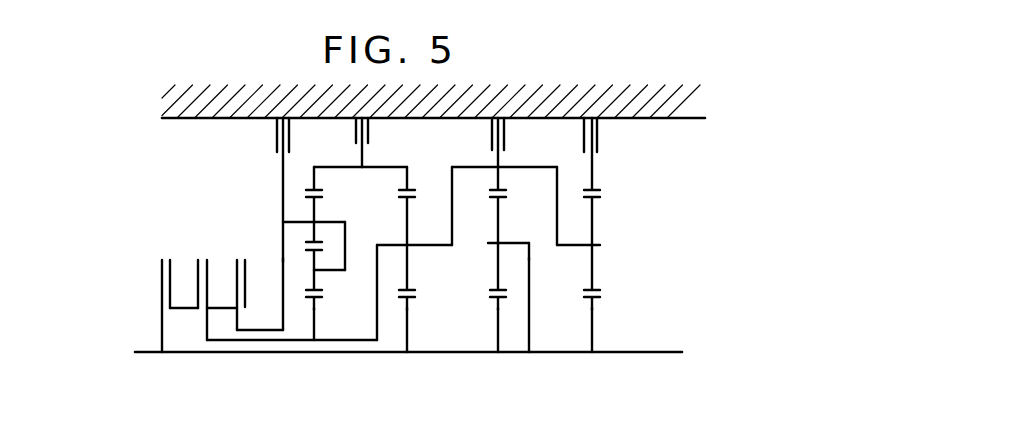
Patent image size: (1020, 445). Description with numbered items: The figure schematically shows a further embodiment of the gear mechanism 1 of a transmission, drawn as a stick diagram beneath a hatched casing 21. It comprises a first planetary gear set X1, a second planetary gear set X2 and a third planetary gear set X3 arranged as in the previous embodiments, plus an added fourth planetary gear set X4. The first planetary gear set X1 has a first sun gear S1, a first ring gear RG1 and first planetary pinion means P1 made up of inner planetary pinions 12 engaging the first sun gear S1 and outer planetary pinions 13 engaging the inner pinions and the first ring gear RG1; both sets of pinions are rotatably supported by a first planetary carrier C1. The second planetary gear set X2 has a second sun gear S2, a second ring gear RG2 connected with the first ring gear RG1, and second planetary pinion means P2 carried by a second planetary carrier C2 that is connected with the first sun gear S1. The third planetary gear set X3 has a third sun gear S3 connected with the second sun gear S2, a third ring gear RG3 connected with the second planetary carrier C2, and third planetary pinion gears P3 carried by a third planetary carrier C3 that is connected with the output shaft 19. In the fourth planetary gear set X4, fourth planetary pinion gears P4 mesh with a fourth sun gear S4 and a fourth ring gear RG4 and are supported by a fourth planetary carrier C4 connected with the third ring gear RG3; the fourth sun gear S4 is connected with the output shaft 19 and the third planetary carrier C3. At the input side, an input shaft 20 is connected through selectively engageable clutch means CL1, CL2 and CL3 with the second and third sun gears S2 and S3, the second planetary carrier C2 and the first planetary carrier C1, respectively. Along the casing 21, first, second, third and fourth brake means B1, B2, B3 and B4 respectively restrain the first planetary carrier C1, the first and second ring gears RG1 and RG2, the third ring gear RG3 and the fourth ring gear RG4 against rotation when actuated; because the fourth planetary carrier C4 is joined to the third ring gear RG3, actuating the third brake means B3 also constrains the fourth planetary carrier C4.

The casing 21 is at (178, 110).
The first brake means B1 is at (277, 135).
The second brake means B2 is at (356, 141).
The third brake means B3 is at (492, 141).
The fourth brake means B4 is at (597, 140).
The first ring gear RG1 is at (318, 182).
The second ring gear RG2 is at (407, 177).
The third ring gear RG3 is at (499, 180).
The fourth ring gear RG4 is at (592, 184).
The outer planetary pinions 13 is at (313, 210).
The inner planetary pinions 12 is at (315, 258).
The first clutch means CL1 is at (168, 258).
The second clutch means CL2 is at (207, 258).
The third clutch means CL3 is at (245, 258).
The first planetary carrier C1 is at (334, 268).
The second planetary carrier C2 is at (421, 237).
The third planetary carrier C3 is at (518, 243).
The fourth planetary carrier C4 is at (567, 245).
The first planetary pinion means P1 is at (326, 286).
The second planetary pinion means P2 is at (409, 270).
The third planetary pinion gears P3 is at (498, 277).
The fourth planetary pinion gears P4 is at (594, 270).
The first sun gear S1 is at (315, 323).
The second sun gear S2 is at (409, 330).
The third sun gear S3 is at (502, 327).
The fourth sun gear S4 is at (593, 335).
The first planetary gear set X1 is at (304, 331).
The second planetary gear set X2 is at (400, 323).
The third planetary gear set X3 is at (487, 318).
The fourth planetary gear set X4 is at (583, 327).
The gear mechanism 1 is at (264, 364).
The input shaft 20 is at (145, 353).
The output shaft 19 is at (632, 354).